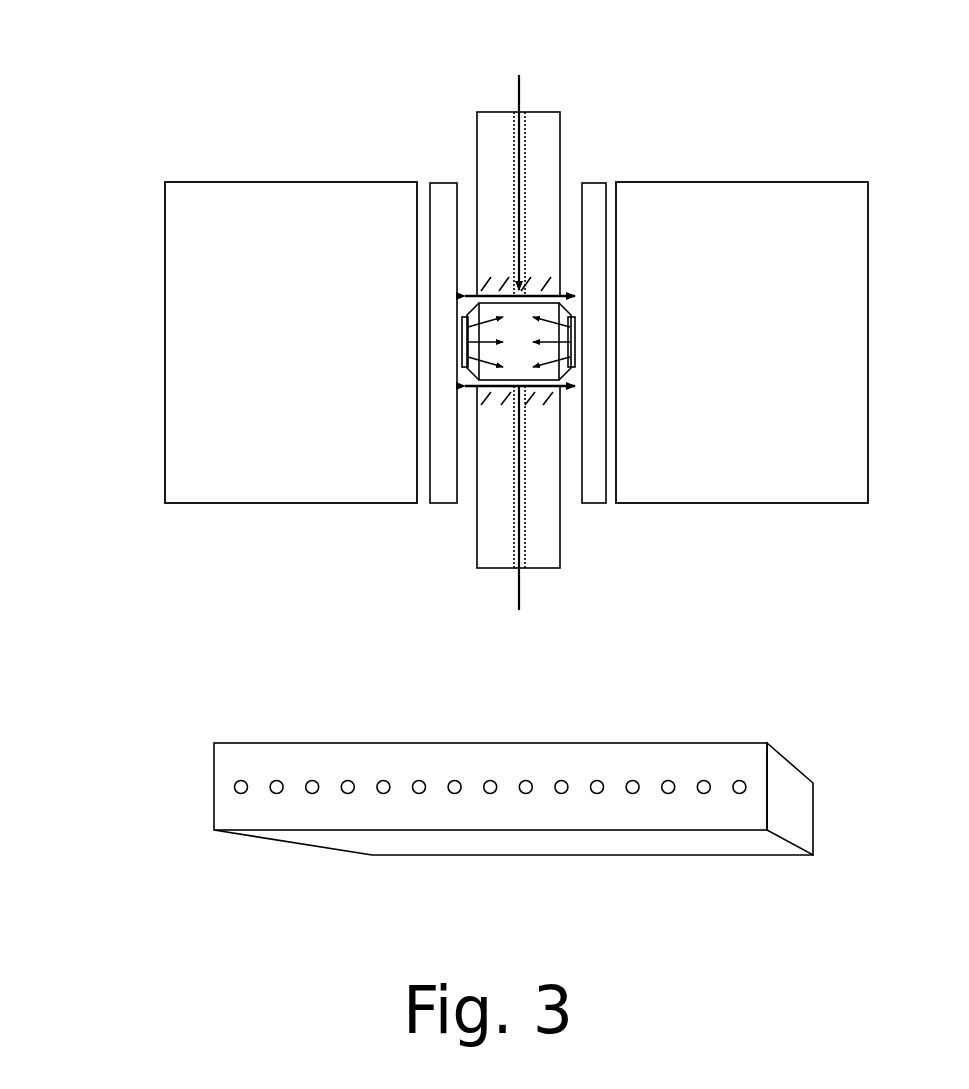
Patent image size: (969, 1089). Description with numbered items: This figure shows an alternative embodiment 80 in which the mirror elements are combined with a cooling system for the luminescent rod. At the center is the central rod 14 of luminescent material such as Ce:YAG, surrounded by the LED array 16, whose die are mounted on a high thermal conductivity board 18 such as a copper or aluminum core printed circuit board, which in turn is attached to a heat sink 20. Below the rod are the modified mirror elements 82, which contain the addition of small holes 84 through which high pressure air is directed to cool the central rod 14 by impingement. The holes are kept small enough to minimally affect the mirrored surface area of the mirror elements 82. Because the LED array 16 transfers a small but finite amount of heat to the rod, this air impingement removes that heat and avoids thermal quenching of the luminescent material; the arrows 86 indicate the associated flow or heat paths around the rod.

The alternative embodiment 80 is at (230, 78).
The heat sink 20 is at (249, 252).
The high thermal conductivity board 18 is at (436, 183).
The central rod 14 is at (520, 338).
The LED array 16 is at (572, 345).
The displacement arrows 86 is at (558, 383).
The modified mirror elements 82 is at (475, 483).
The small holes 84 is at (385, 780).